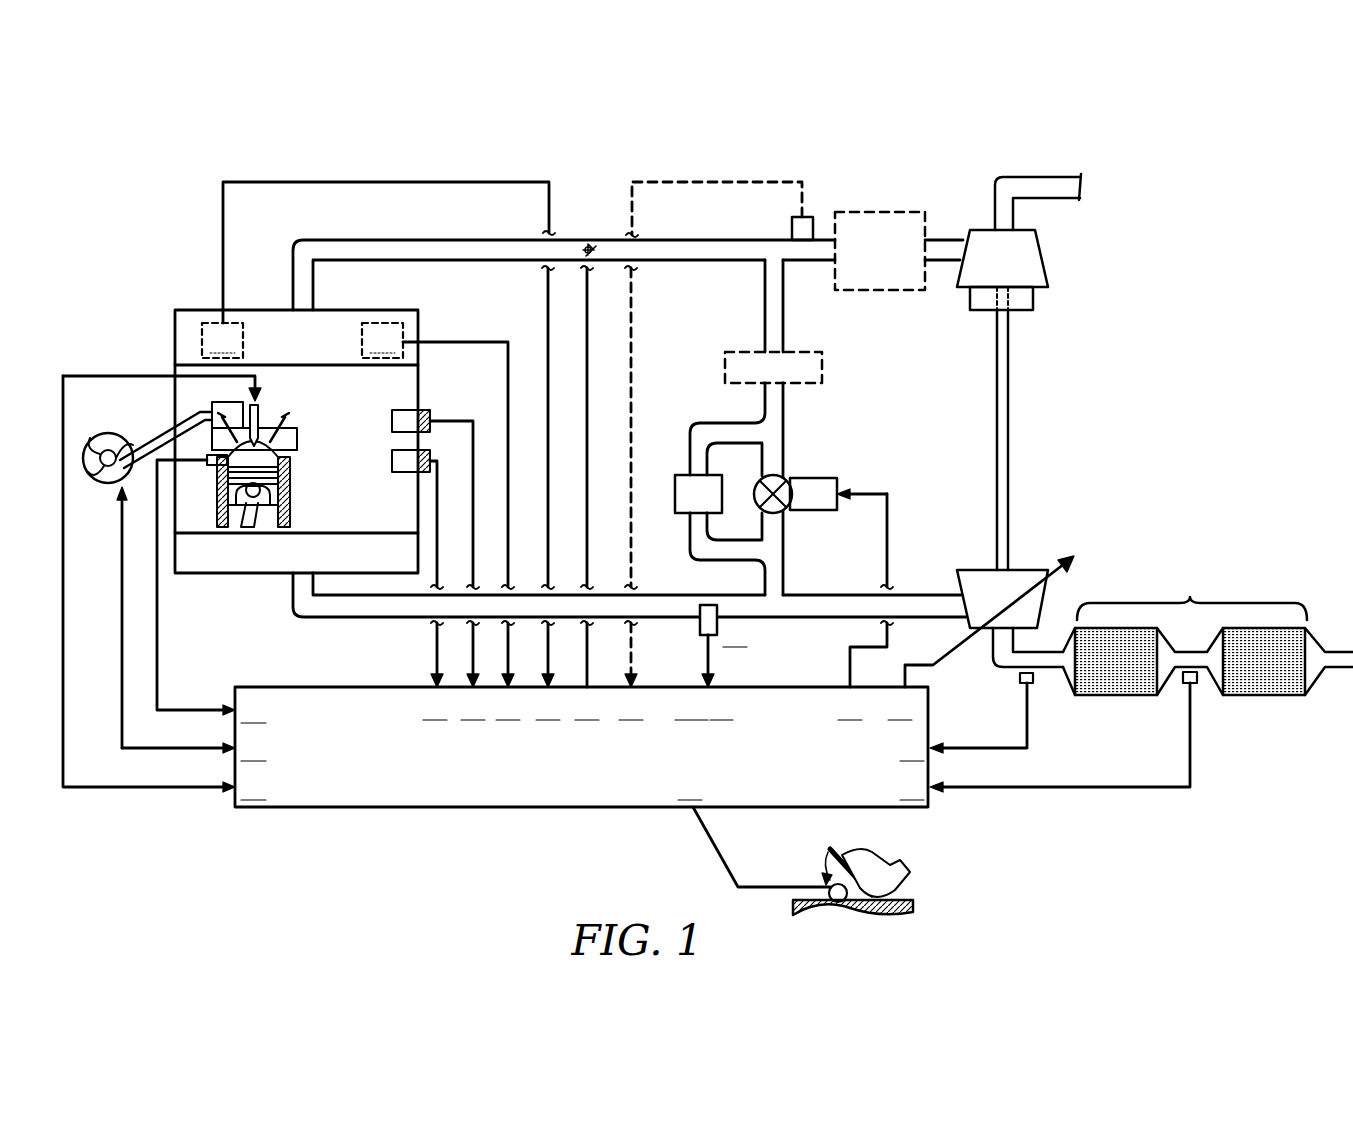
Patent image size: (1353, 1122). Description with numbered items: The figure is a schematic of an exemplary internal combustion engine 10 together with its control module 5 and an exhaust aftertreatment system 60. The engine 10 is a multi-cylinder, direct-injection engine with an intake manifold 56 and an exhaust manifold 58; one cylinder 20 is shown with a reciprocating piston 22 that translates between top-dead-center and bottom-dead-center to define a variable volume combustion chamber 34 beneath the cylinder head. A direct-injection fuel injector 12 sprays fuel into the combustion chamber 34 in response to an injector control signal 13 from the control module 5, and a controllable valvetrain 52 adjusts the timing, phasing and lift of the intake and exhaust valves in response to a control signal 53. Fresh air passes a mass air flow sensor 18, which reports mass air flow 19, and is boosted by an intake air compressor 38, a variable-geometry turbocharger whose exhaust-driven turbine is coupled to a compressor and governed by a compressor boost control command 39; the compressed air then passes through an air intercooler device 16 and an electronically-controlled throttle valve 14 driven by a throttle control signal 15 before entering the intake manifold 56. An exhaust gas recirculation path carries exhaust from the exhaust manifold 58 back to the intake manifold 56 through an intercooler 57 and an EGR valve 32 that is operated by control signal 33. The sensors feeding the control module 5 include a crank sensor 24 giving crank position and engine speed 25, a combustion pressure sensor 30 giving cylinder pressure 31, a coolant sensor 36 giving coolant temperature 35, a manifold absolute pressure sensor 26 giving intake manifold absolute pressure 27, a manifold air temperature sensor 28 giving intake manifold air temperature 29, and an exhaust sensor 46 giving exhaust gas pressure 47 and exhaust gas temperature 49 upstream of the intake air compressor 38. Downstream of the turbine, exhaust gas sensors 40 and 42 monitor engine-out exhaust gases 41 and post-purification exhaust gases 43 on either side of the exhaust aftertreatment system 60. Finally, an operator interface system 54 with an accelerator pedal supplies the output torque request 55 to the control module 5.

The control module 5 is at (585, 808).
The internal combustion engine 10 is at (194, 295).
The direct-injection fuel injector 12 is at (262, 415).
The injector control signal 13 is at (165, 588).
The electronically-controlled throttle valve 14 is at (591, 240).
The throttle control signal 15 is at (586, 493).
The air intercooler device 16 is at (882, 292).
The mass air flow sensor 18 is at (808, 215).
The mass air flow 19 is at (630, 493).
The cylinder 20 is at (290, 503).
The piston 22 is at (288, 490).
The crank sensor 24 is at (412, 473).
The engine crank position and engine speed 25 is at (434, 671).
The manifold absolute pressure sensor 26 is at (438, 456).
The intake manifold absolute pressure 27 is at (508, 671).
The manifold air temperature sensor 28 is at (378, 270).
The intake manifold air temperature 29 is at (547, 493).
The combustion pressure sensor 30 is at (212, 467).
The cylinder pressure 31 is at (252, 712).
The EGR valve 32 is at (783, 481).
The EGR control signal 33 is at (864, 607).
The variable volume combustion chamber 34 is at (292, 457).
The engine coolant temperature 35 is at (472, 671).
The coolant sensor 36 is at (420, 408).
The intake air compressor 38 is at (1037, 405).
The compressor boost control command 39 is at (979, 638).
The exhaust gas sensor 40 is at (1018, 682).
The engine-out exhaust gases 41 is at (911, 750).
The exhaust gas sensor 42 is at (1195, 690).
The post-purification exhaust gases 43 is at (911, 789).
The exhaust sensor 46 is at (725, 646).
The exhaust gas pressure 47 is at (691, 709).
The exhaust gas temperature 49 is at (719, 709).
The controllable valvetrain 52 is at (114, 487).
The valvetrain control signal 53 is at (195, 750).
The operator interface system 54 is at (862, 865).
The output torque request 55 is at (752, 832).
The intake manifold 56 is at (248, 308).
The intercooler 57 is at (726, 365).
The exhaust manifold 58 is at (240, 575).
The exhaust aftertreatment system 60 is at (1192, 597).